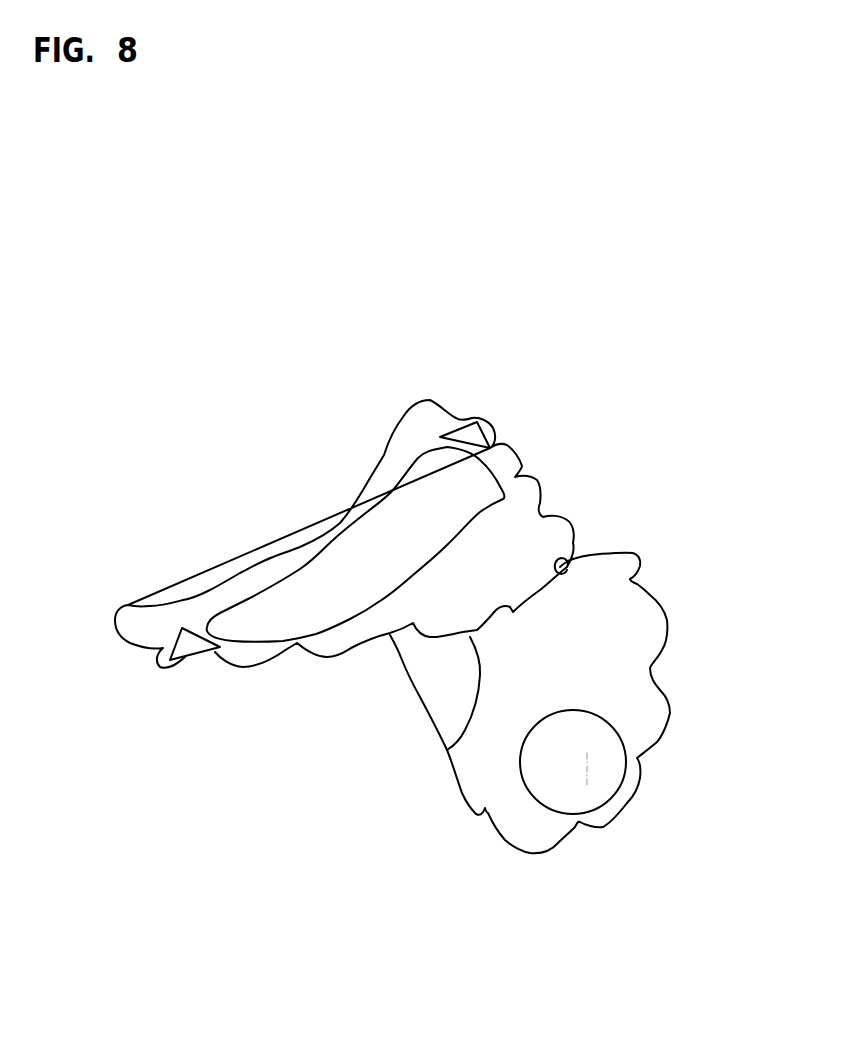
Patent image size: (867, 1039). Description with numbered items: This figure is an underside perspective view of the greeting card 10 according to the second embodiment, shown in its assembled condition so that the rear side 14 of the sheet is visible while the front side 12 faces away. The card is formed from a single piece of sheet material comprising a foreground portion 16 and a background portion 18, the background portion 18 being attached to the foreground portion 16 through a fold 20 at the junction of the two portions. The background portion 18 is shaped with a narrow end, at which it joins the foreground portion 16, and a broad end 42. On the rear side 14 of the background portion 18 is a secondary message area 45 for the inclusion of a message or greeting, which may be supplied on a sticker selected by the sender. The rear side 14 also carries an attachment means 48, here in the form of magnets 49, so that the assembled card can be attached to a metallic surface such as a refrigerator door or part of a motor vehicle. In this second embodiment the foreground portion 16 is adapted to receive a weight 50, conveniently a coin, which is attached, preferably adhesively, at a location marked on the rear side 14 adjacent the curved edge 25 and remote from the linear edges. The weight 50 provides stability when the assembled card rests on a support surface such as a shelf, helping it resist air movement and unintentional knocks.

The greeting card 10 is at (240, 514).
The front side 12 is at (463, 677).
The rear side 14 is at (478, 592).
The foreground portion 16 is at (437, 685).
The background portion 18 is at (390, 483).
The fold 20 is at (540, 590).
The curved edge 25 is at (667, 720).
The broad end 42 is at (213, 586).
The secondary message area 45 is at (453, 505).
The attachment means 48 is at (477, 437).
The magnets 49 is at (460, 437).
The weight 50 is at (613, 770).